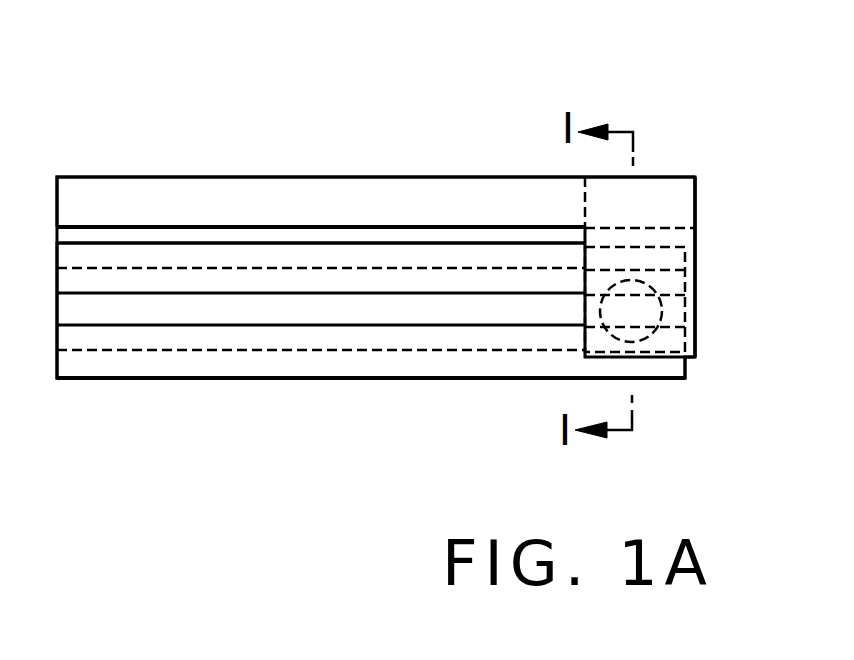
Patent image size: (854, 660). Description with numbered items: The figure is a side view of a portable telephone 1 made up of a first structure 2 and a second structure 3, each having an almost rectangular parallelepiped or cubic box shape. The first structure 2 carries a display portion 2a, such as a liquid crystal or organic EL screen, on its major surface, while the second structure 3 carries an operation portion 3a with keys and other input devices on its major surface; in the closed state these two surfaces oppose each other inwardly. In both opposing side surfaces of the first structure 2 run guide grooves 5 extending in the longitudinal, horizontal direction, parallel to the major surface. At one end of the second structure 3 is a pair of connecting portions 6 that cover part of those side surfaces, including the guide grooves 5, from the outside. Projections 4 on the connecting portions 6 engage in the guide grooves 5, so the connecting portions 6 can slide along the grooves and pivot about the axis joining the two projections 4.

The portable telephone 1 is at (93, 40).
The first structure 2 is at (405, 362).
The display portion 2a is at (452, 243).
The second structure 3 is at (190, 190).
The operation portion 3a is at (380, 226).
The projection 4 is at (662, 312).
The guide groove 5 is at (175, 315).
The connecting portion 6 is at (698, 233).